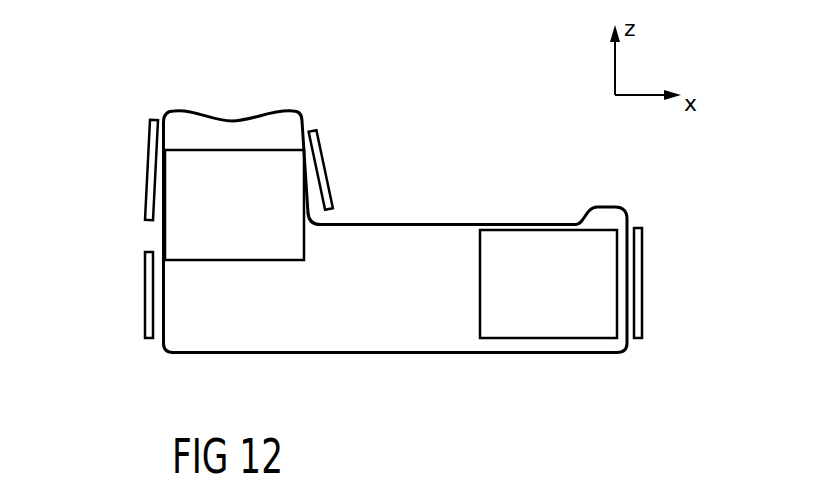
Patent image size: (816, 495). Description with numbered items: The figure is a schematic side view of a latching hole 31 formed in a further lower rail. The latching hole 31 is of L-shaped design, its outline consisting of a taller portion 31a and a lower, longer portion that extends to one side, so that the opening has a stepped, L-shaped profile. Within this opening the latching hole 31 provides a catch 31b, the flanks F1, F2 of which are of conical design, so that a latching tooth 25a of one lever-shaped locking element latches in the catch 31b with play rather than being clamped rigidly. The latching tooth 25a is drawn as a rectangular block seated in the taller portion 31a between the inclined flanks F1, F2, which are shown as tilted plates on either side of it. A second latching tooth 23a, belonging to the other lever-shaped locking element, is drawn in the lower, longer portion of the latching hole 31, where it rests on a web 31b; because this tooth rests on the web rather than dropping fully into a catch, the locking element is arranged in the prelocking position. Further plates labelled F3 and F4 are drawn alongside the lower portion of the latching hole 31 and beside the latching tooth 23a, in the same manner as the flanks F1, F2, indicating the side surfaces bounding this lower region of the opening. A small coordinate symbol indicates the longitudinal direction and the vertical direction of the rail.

The latching hole 31 is at (396, 189).
The first housing section 31a is at (232, 120).
The catch 31b is at (387, 228).
The latching tooth 25a is at (235, 242).
The latching tooth 23a is at (548, 323).
The flank F1 is at (148, 162).
The flank F2 is at (327, 168).
The third force F3 is at (145, 295).
The fourth force F4 is at (642, 285).